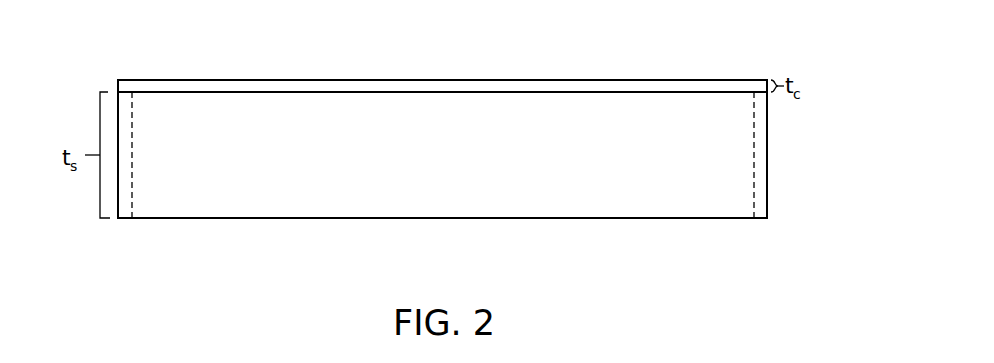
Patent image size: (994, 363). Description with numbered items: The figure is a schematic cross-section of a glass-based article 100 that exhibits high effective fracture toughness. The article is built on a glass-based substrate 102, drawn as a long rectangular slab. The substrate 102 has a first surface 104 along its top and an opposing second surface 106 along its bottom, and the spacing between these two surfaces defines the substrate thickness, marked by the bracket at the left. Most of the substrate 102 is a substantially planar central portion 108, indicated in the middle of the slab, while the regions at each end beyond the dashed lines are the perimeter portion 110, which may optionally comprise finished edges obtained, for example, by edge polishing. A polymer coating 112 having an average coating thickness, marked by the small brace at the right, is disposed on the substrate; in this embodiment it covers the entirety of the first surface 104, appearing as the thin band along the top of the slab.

The coated article 100 is at (157, 53).
The glass-based substrate 102 is at (768, 200).
The first surface 104 is at (700, 92).
The second surface 106 is at (630, 218).
The substantially planar central portion 108 is at (430, 163).
The perimeter portion 110 is at (125, 205).
The polymer coating 112 is at (443, 87).